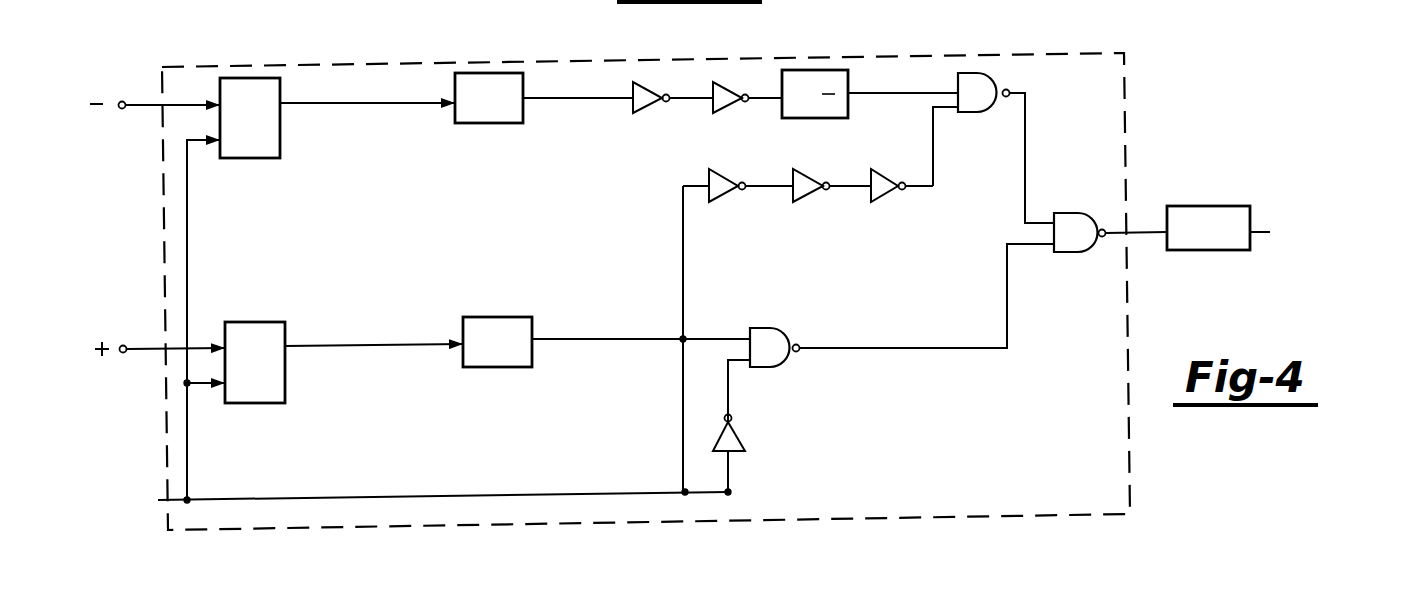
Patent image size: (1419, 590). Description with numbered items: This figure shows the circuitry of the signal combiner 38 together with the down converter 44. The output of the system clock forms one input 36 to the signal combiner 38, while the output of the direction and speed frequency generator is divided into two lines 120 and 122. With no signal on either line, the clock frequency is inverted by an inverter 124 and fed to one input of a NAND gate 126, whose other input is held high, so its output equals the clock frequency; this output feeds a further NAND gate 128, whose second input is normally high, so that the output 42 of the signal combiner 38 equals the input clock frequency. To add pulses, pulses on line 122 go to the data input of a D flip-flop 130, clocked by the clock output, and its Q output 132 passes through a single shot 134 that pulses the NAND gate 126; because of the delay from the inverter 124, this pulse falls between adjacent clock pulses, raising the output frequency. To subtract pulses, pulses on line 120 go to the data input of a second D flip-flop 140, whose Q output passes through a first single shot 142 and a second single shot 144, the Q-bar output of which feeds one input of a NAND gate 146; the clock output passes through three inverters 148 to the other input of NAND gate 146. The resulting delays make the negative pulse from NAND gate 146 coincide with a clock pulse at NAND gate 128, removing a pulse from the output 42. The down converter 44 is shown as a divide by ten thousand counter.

The input 36 is at (162, 502).
The signal combiner 38 is at (935, 8).
The output 42 is at (1137, 230).
The down converter 44 is at (1232, 206).
The line 120 is at (123, 101).
The line 122 is at (123, 345).
The inverter 124 is at (740, 441).
The NAND gate 126 is at (785, 328).
The NAND gate 128 is at (1103, 162).
The D flip-flop 130 is at (262, 320).
The Q output 132 is at (298, 345).
The single shot 134 is at (480, 317).
The D flip-flop 140 is at (280, 150).
The single shot 142 is at (480, 123).
The single shot 144 is at (813, 118).
The NAND gate 146 is at (990, 72).
The inverters 148 is at (868, 200).